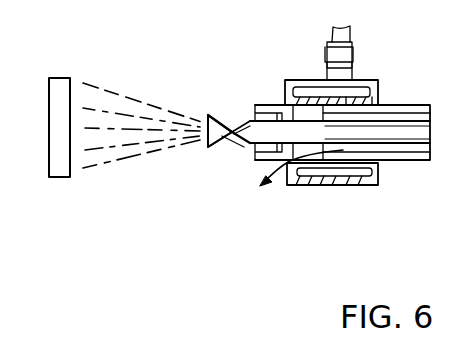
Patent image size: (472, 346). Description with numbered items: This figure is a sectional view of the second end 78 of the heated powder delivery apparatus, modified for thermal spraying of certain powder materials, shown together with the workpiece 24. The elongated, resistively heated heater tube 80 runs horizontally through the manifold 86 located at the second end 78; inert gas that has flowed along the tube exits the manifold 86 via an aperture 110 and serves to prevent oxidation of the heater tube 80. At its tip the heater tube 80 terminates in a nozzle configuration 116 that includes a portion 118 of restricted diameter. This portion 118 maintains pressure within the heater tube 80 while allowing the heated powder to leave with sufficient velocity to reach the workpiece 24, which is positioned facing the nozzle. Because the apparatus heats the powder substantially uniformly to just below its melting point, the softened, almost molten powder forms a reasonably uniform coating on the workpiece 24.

The workpiece 24 is at (57, 178).
The second end 78 is at (400, 166).
The heater tube 80 is at (265, 105).
The manifold 86 is at (330, 186).
The aperture 110 is at (290, 158).
The nozzle configuration 116 is at (217, 120).
The portion of restricted diameter 118 is at (226, 145).